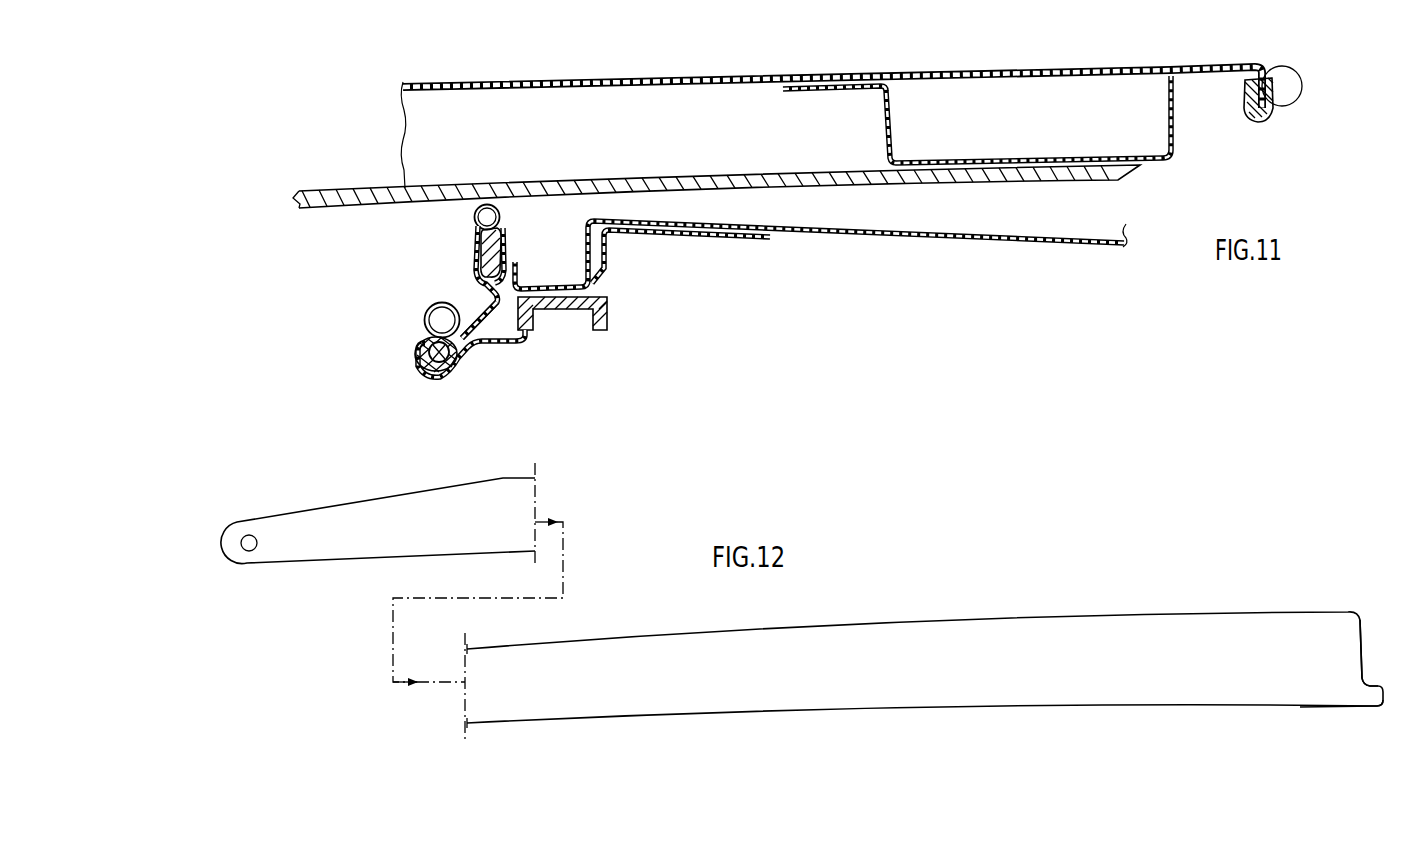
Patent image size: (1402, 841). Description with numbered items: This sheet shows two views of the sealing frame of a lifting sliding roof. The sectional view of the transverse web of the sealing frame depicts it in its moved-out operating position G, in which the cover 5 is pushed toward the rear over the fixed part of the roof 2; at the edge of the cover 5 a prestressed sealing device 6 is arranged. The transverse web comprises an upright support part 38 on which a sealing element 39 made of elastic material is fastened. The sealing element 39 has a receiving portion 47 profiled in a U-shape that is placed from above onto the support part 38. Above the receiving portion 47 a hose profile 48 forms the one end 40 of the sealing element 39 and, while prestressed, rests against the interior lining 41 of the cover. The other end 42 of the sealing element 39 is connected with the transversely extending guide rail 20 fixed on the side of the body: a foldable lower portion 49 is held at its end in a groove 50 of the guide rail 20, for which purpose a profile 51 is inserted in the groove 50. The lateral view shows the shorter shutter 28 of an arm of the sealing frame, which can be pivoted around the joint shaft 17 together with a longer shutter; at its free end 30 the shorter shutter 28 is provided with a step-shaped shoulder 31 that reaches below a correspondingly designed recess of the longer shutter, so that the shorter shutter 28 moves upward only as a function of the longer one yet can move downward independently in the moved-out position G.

In FIG. 11, the fixed part of the roof 2 is at (978, 236).
In FIG. 11, the cover 5 is at (968, 64).
In FIG. 11, the sealing device 6 is at (1281, 97).
In FIG. 12, the joint shaft 17 is at (249, 552).
In FIG. 11, the transversely extending guide rail 20 is at (524, 337).
In FIG. 12, the shorter shutter 28 is at (615, 645).
In FIG. 12, the free end 30 is at (1372, 711).
In FIG. 12, the step-shaped shoulder 31 is at (1366, 680).
In FIG. 11, the upright support part 38 is at (480, 246).
In FIG. 11, the sealing element 39 is at (477, 272).
In FIG. 11, the end of the sealing element 40 is at (471, 214).
In FIG. 11, the interior lining of the cover 41 is at (488, 190).
In FIG. 11, the other end of the sealing element 42 is at (428, 371).
In FIG. 11, the receiving portion 47 is at (505, 240).
In FIG. 11, the hose profile 48 is at (499, 203).
In FIG. 11, the foldable lower portion 49 is at (492, 325).
In FIG. 11, the groove 50 is at (417, 352).
In FIG. 11, the profile 51 is at (423, 327).
In FIG. 11, the moved-out operating position G is at (517, 248).